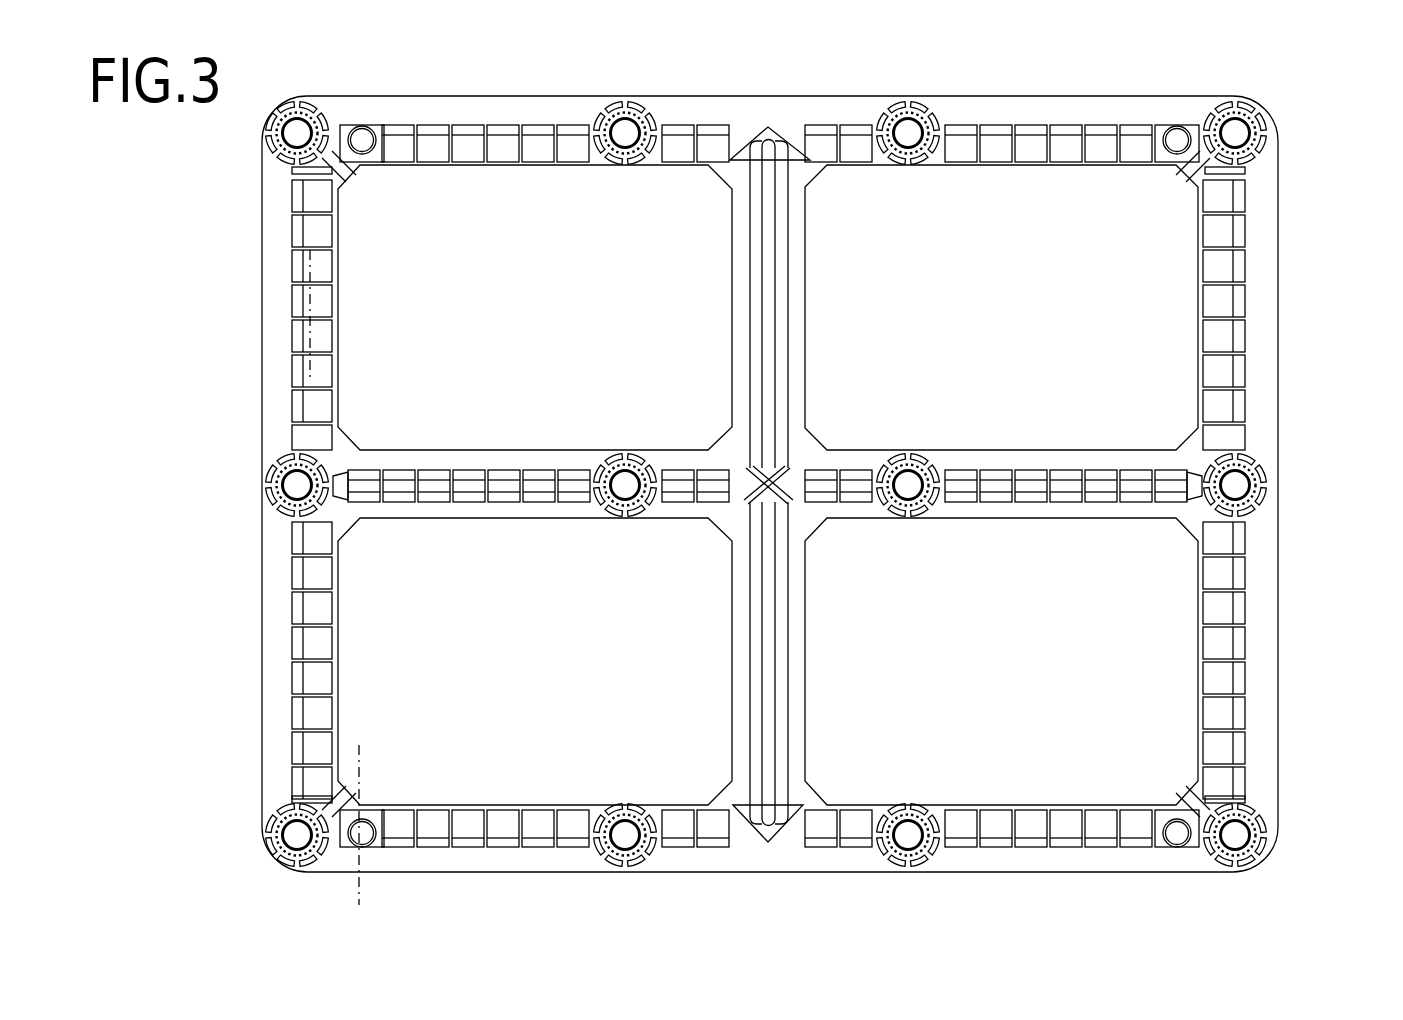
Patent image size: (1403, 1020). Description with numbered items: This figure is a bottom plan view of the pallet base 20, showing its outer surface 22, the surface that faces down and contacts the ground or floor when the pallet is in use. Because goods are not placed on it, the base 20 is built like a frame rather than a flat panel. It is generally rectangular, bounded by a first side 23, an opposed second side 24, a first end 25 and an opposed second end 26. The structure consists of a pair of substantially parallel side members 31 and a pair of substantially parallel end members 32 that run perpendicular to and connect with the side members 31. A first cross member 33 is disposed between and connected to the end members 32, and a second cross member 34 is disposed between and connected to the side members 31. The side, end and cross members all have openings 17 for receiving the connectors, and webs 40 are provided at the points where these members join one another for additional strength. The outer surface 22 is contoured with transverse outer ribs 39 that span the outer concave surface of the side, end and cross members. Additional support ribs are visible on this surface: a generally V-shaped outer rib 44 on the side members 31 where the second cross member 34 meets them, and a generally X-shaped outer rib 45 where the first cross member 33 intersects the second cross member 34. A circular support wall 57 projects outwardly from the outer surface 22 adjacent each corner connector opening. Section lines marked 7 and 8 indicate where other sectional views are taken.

The openings 17 is at (299, 137).
The side members 31 is at (462, 104).
The first side 23 is at (628, 92).
The V-shaped outer rib 44 is at (776, 128).
The base 20 is at (918, 91).
The outer surface 22 is at (1062, 106).
The webs 40 is at (345, 176).
The section line 7- 7 is at (268, 268).
The second cross member 34 is at (796, 300).
The transverse outer ribs 39 is at (777, 347).
The end members 32 is at (1260, 403).
The X-shaped outer rib 45 is at (777, 482).
The first end 25 is at (240, 470).
The first cross member 33 is at (508, 508).
The second end 26 is at (1298, 626).
The circular support wall 57 is at (362, 830).
The section line 8- 8 is at (308, 768).
The second side 24 is at (708, 878).